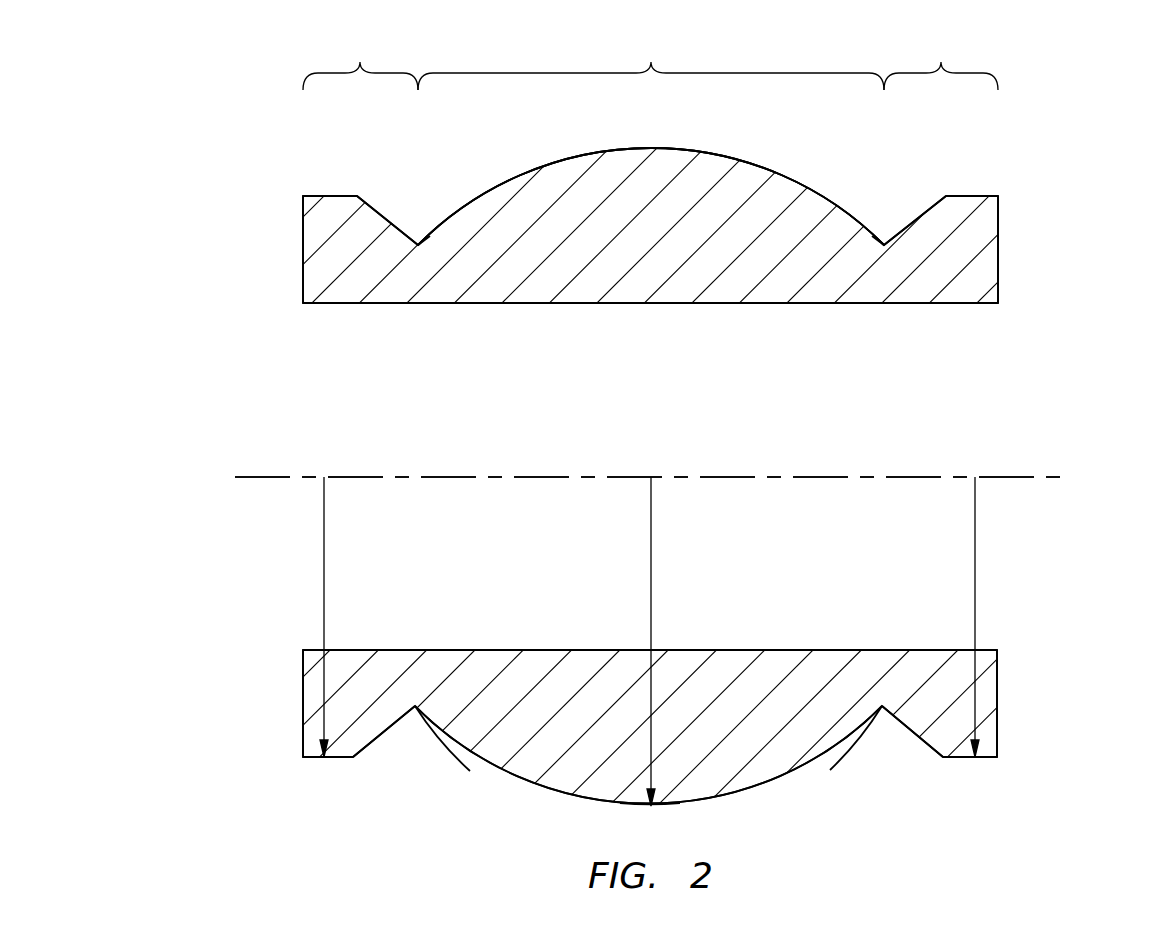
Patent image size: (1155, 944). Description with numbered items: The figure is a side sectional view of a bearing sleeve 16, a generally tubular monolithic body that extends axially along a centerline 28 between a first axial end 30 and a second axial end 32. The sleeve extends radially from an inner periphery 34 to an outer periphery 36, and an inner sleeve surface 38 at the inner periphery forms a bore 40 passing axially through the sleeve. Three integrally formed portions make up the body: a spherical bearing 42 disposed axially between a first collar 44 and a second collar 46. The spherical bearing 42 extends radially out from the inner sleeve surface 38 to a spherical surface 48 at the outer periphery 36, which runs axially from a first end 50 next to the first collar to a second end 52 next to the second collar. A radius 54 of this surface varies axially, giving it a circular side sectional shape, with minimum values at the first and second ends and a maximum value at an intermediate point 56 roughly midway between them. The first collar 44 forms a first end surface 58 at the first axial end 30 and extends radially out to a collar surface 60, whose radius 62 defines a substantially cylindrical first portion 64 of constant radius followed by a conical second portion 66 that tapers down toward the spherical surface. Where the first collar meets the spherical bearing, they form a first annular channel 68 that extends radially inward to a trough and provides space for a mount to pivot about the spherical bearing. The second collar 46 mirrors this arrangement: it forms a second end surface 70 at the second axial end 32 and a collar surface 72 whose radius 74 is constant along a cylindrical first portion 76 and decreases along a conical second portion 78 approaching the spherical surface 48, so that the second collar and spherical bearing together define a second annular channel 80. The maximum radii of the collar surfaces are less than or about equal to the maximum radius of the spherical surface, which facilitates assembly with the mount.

The bearing sleeve 16 is at (1015, 157).
The centerline 28 is at (1050, 478).
The first axial end 30 is at (303, 277).
The second axial end 32 is at (1067, 249).
The inner periphery 34 is at (516, 320).
The outer periphery 36 is at (514, 173).
The inner sleeve surface 38 is at (625, 305).
The bore 40 is at (373, 447).
The spherical bearing 42 is at (651, 60).
The first collar 44 is at (360, 60).
The second collar 46 is at (941, 60).
The spherical surface 48 is at (730, 155).
The first end 50 is at (425, 228).
The second end 52 is at (883, 242).
The radius 54 is at (652, 562).
The intermediate point 56 is at (651, 807).
The first end surface 58 is at (237, 251).
The collar surface 60 is at (330, 196).
The radius 62 is at (326, 555).
The first portion 64 is at (317, 758).
The second portion 66 is at (382, 735).
The first annular channel 68 is at (424, 750).
The second end surface 70 is at (998, 255).
The collar surface 72 is at (964, 197).
The radius 74 is at (977, 578).
The first portion 76 is at (982, 758).
The second portion 78 is at (904, 733).
The second annular channel 80 is at (872, 745).